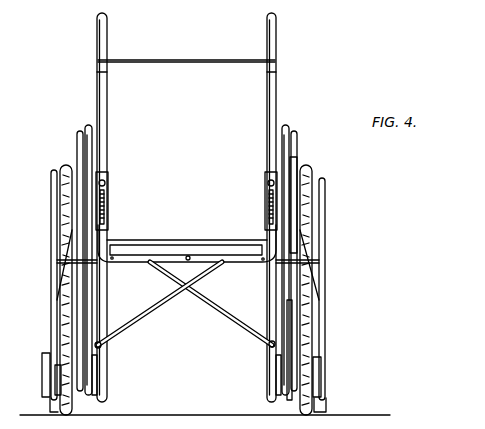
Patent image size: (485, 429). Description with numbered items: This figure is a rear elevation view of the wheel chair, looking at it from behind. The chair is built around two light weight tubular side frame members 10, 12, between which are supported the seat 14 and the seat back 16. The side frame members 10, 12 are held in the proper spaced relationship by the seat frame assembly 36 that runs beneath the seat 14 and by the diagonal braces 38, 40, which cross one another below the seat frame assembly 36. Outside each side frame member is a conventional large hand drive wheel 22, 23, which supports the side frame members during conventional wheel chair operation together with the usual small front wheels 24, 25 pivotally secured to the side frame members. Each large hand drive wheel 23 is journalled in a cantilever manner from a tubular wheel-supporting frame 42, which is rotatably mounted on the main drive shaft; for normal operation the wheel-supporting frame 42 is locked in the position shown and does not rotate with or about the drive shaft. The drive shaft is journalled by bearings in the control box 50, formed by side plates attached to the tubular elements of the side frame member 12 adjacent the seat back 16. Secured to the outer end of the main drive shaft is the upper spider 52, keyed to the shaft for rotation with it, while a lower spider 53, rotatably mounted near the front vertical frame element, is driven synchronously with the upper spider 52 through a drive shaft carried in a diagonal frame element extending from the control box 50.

The tubular side frame member 10 is at (277, 33).
The tubular side frame member 12 is at (100, 33).
The seat 14 is at (172, 250).
The seat back 16 is at (193, 143).
The hand drive wheel 22 is at (312, 168).
The hand drive wheel 23 is at (65, 166).
The small front wheel 24 is at (322, 408).
The small front wheel 25 is at (50, 405).
The seat frame assembly 36 is at (131, 261).
The diagonal brace 38 is at (227, 310).
The diagonal brace 40 is at (138, 318).
The tubular wheel-supporting frame 42 is at (88, 125).
The control box 50 is at (106, 183).
The upper spider 52 is at (78, 138).
The lower spider 53 is at (92, 385).